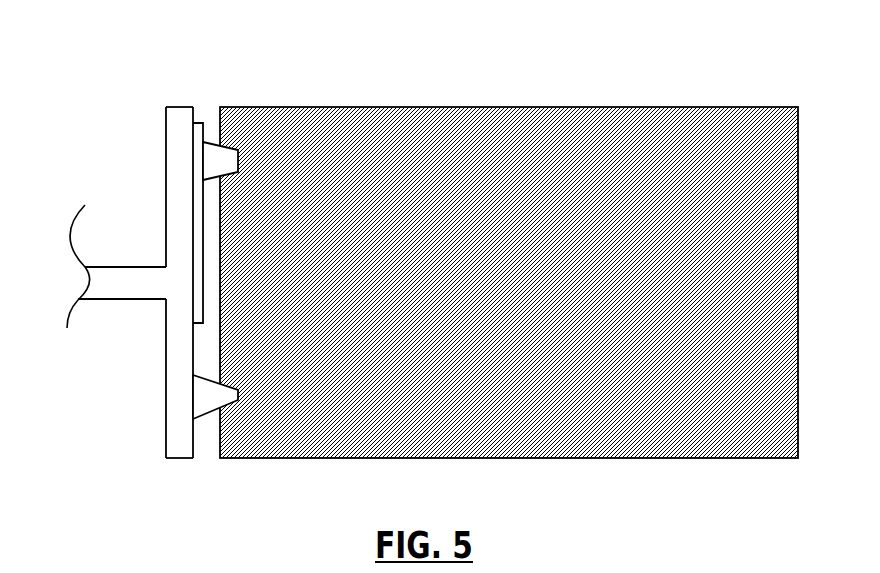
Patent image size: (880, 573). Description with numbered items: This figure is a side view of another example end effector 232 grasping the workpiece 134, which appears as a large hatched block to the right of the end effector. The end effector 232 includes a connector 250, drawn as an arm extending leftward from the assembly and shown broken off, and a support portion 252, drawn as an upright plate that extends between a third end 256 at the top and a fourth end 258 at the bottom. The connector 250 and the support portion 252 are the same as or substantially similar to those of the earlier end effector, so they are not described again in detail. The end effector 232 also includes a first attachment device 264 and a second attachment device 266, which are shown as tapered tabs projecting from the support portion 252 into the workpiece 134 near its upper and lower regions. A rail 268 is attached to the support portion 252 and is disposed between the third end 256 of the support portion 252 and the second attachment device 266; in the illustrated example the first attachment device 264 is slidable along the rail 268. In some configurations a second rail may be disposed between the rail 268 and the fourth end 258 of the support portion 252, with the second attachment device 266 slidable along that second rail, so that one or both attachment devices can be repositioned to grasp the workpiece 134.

The workpiece 134 is at (727, 100).
The end effector 232 is at (136, 185).
The connector 250 is at (127, 290).
The support portion 252 is at (180, 353).
The third end 256 is at (180, 113).
The fourth end 258 is at (183, 447).
The first attachment device 264 is at (212, 162).
The second attachment device 266 is at (207, 405).
The rail 268 is at (199, 127).